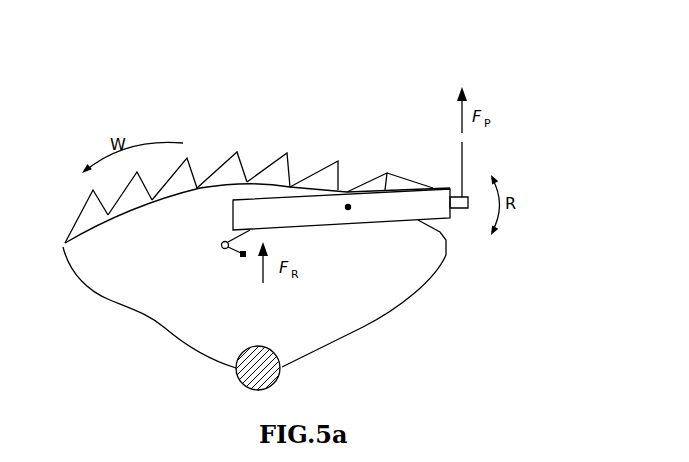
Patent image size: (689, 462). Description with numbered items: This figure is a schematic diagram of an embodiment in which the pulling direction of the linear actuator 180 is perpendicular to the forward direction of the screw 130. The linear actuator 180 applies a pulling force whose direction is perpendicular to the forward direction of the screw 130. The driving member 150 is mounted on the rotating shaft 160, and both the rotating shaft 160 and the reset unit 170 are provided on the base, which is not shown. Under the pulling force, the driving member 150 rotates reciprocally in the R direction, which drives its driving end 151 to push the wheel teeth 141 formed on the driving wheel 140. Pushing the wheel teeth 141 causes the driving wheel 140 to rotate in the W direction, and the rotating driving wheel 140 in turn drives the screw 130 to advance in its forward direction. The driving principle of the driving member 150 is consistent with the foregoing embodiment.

The screw 130 is at (270, 375).
The driving wheel 140 is at (353, 327).
The wheel teeth 141 is at (220, 177).
The driving member 150 is at (312, 202).
The driving end 151 is at (403, 181).
The rotating shaft 160 is at (348, 203).
The reset unit 170 is at (221, 245).
The linear actuator 180 is at (463, 152).